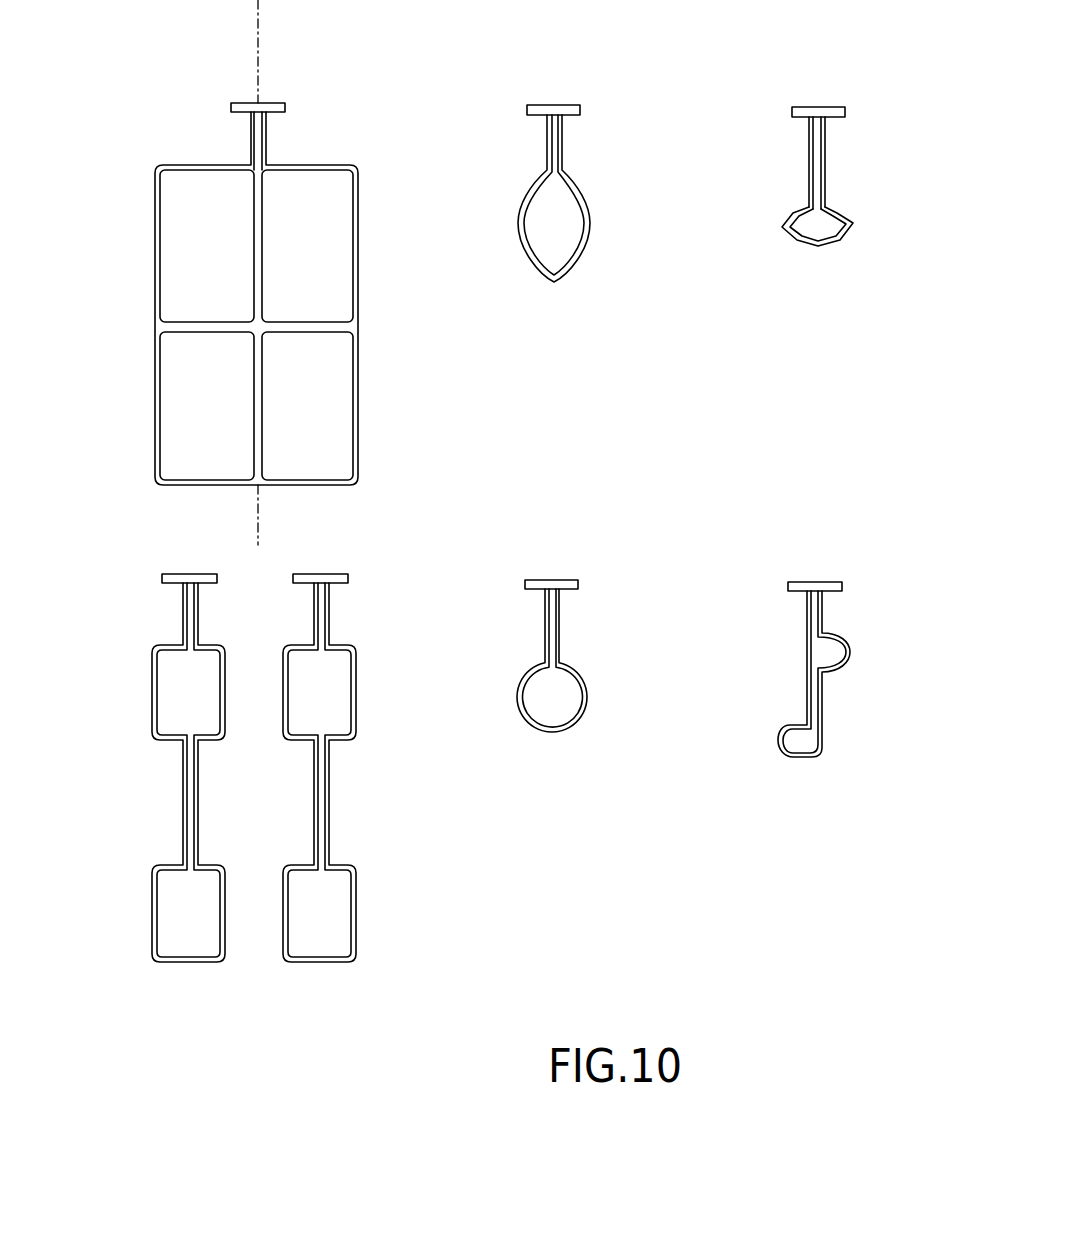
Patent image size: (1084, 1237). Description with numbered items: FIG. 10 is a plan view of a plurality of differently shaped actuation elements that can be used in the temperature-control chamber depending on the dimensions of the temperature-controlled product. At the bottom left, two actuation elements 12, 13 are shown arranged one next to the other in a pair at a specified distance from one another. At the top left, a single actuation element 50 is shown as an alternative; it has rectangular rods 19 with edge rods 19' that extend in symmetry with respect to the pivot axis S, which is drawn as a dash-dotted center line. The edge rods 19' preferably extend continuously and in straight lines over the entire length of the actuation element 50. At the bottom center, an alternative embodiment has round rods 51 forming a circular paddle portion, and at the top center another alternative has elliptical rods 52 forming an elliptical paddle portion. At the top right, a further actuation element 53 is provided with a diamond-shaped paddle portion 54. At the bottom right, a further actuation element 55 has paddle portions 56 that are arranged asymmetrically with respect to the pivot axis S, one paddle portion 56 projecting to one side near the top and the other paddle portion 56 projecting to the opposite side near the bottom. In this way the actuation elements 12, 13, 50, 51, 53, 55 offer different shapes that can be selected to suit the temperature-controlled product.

The pivot axis S is at (258, 22).
The rectangular rods 19 is at (287, 315).
The edge rods 19' is at (254, 325).
The single actuation element 50 is at (248, 315).
The round rods 51 is at (553, 730).
The elliptical rods 52 is at (562, 278).
The actuation element 53 is at (853, 228).
The diamond-shaped paddle portion 54 is at (833, 227).
The actuation element 55 is at (858, 708).
The paddle portions 56 is at (833, 650).
The actuation element 12 is at (186, 989).
The actuation element 13 is at (313, 989).